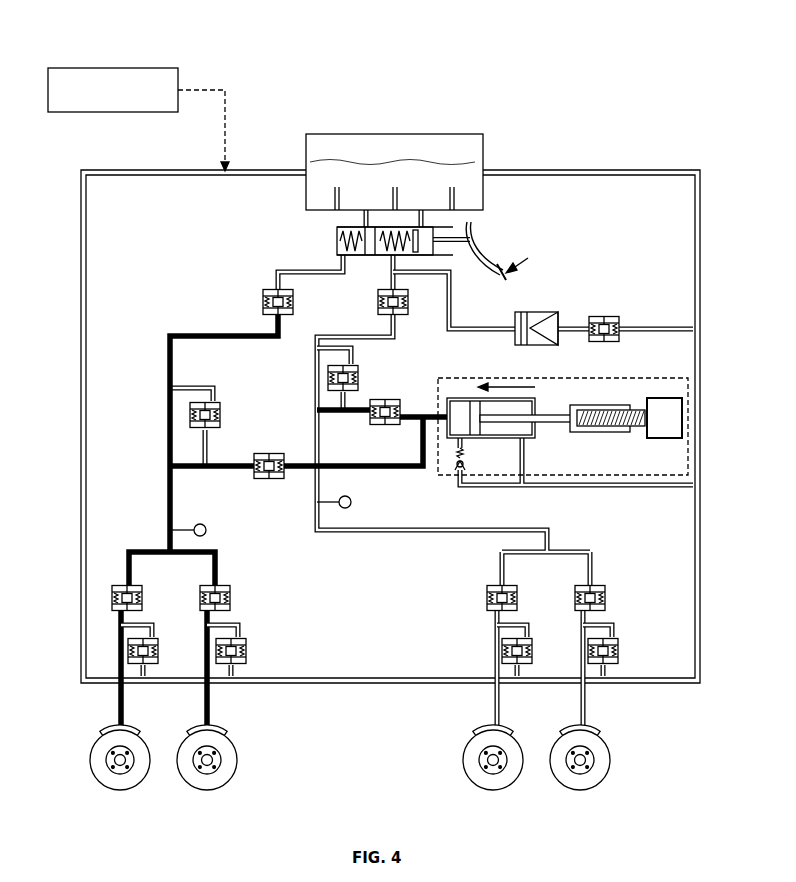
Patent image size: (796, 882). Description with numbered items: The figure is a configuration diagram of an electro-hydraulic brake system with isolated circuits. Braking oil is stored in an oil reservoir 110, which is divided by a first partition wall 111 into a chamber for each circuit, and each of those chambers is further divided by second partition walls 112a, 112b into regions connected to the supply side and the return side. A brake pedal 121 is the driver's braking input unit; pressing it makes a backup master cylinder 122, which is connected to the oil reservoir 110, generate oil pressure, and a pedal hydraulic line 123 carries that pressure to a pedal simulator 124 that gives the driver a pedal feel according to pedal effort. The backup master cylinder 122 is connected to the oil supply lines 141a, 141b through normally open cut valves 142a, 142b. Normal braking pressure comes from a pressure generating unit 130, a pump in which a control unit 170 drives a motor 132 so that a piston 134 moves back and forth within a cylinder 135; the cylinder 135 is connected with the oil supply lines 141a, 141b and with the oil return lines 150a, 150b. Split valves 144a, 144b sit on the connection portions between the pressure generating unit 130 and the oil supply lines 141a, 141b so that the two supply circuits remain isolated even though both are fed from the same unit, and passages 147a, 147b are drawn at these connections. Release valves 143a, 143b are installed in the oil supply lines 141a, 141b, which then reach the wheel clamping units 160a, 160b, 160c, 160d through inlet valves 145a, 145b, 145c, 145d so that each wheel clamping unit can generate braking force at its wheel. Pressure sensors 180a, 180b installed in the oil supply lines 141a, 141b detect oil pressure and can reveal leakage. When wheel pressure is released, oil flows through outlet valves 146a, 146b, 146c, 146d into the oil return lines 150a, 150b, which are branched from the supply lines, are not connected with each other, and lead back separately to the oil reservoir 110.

The oil reservoir 110 is at (345, 134).
The first partition wall 111 is at (395, 196).
The second partition wall 112a is at (333, 198).
The second partition wall 112b is at (455, 196).
The brake pedal 121 is at (470, 238).
The backup master cylinder 122 is at (337, 234).
The pedal hydraulic line 123 is at (393, 265).
The pedal simulator 124 is at (545, 308).
The pressure generating unit 130 is at (688, 392).
The motor 132 is at (665, 438).
The piston 134 is at (553, 438).
The cylinder 135 is at (510, 398).
The oil supply line 141a is at (170, 418).
The oil supply line 141b is at (410, 532).
The cut valve 142a is at (263, 302).
The cut valve 142b is at (378, 302).
The release valve 143a is at (220, 417).
The release valve 143b is at (358, 372).
The split valve 144a is at (268, 479).
The split valve 144b is at (385, 425).
The inlet valve 145a is at (113, 590).
The inlet valve 145b is at (230, 590).
The inlet valve 145c is at (487, 598).
The inlet valve 145d is at (605, 590).
The outlet valve 146a is at (156, 640).
The outlet valve 146b is at (246, 650).
The outlet valve 146c is at (532, 638).
The outlet valve 146d is at (618, 650).
The first hydraulic passage 147a is at (392, 470).
The second hydraulic passage 147b is at (410, 410).
The oil return line 150a is at (81, 555).
The oil return line 150b is at (700, 597).
The wheel clamping unit 160a is at (101, 727).
The wheel clamping unit 160b is at (216, 727).
The wheel clamping unit 160c is at (476, 727).
The wheel clamping unit 160d is at (588, 727).
The control unit 170 is at (130, 68).
The pressure sensor 180a is at (200, 524).
The pressure sensor 180b is at (345, 509).